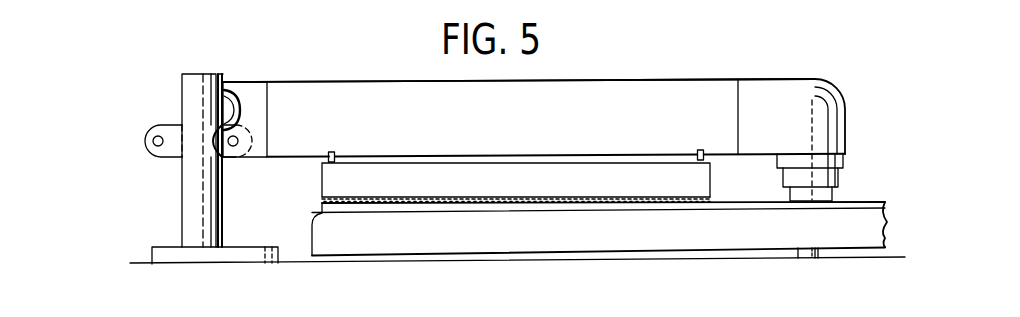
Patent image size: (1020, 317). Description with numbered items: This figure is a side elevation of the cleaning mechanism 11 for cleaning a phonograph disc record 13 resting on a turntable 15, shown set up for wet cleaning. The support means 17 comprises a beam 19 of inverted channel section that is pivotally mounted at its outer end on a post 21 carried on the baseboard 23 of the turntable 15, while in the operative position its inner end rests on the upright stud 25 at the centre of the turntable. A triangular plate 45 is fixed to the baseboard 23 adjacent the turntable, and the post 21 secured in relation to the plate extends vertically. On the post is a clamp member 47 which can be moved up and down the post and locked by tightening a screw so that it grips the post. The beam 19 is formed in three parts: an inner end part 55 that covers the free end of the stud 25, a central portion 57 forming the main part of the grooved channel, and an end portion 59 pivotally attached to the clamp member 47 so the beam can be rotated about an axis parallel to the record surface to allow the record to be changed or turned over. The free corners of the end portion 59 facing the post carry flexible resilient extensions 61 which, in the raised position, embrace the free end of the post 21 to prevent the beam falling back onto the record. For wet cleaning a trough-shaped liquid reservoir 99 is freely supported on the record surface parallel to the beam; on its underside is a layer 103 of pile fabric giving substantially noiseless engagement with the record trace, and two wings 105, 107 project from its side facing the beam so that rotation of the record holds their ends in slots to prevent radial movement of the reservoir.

The cleaning mechanism 11 is at (789, 59).
The phonograph disc record 13 is at (865, 203).
The turntable 15 is at (855, 233).
The support means 17 is at (330, 101).
The beam 19 is at (456, 123).
The post 21 is at (182, 96).
The baseboard 23 is at (165, 303).
The upright stud 25 is at (837, 202).
The triangular plate 45 is at (241, 247).
The clamp member 47 is at (171, 158).
The inner end part 55 is at (763, 128).
The central portion 57 is at (568, 150).
The end portion 59 is at (256, 92).
The flexible resilient extensions 61 is at (225, 82).
The liquid reservoir 99 is at (507, 180).
The layer of pile fabric 103 is at (620, 198).
The wing 105 is at (334, 153).
The wing 107 is at (702, 148).